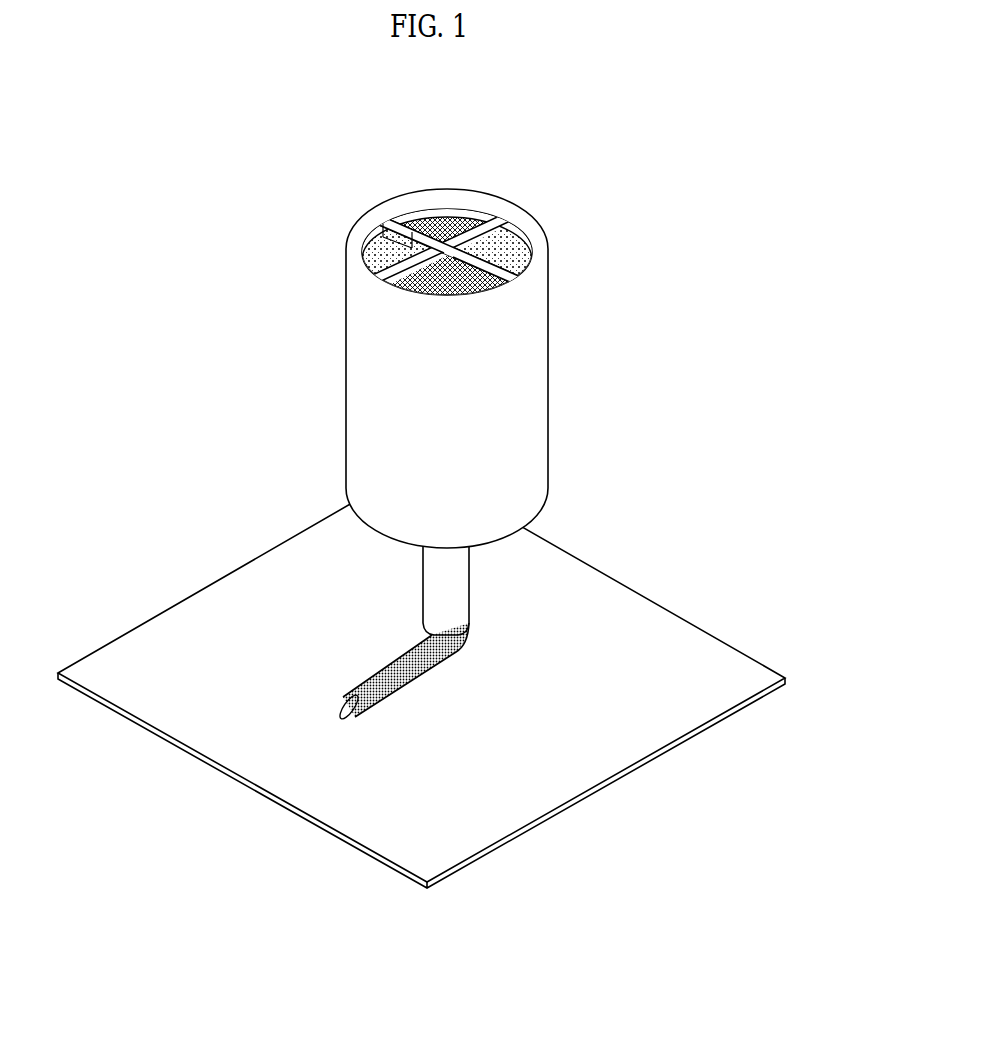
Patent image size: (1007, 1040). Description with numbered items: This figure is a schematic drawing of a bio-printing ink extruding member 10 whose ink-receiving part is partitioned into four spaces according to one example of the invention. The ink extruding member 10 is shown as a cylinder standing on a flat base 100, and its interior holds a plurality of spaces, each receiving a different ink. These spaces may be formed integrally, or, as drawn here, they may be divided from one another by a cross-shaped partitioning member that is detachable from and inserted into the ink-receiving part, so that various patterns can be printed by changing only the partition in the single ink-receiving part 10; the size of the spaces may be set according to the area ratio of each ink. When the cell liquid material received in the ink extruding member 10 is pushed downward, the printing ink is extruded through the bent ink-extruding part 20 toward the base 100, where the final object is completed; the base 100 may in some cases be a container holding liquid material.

The ink extruding member 10 is at (535, 391).
The ink-extruding part 20 is at (453, 585).
The base 100 is at (605, 752).